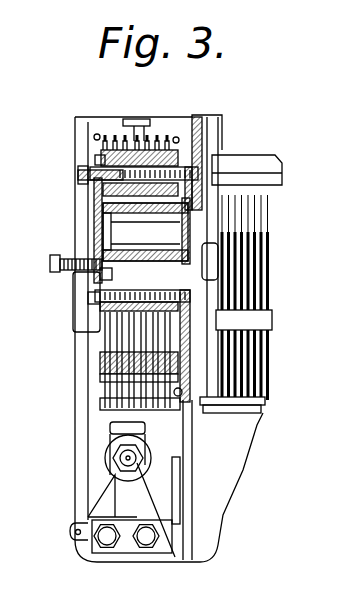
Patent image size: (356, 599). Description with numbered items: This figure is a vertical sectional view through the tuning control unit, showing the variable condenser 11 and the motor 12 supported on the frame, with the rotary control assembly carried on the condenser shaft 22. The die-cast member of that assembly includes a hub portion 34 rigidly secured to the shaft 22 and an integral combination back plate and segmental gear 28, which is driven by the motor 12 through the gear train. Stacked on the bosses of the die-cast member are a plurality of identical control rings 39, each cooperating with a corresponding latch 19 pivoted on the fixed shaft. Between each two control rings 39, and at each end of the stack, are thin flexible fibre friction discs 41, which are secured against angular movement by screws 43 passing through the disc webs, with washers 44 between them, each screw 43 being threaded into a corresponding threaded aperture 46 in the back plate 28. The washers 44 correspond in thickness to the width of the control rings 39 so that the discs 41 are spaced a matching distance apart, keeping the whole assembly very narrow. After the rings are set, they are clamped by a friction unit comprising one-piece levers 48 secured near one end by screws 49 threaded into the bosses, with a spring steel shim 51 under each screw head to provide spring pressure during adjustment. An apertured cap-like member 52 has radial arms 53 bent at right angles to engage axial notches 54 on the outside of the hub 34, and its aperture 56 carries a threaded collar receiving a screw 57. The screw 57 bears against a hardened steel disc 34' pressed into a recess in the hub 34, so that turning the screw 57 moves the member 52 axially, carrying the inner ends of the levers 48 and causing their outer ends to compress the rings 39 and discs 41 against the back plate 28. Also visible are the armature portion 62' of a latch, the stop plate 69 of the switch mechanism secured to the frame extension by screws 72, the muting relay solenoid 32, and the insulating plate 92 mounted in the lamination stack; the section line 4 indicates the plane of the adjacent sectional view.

The section line 4- 4 is at (103, 145).
The variable condenser 11 is at (235, 405).
The motor 12 is at (216, 504).
The latch 19 is at (100, 402).
The condenser shaft 22 is at (274, 244).
The back plate 28 is at (178, 394).
The solenoid 32 is at (107, 466).
The hub portion 34 is at (237, 166).
The hardened steel disc 34' is at (70, 230).
The control ring 39 is at (170, 147).
The friction disc 41 is at (100, 381).
The screw 43 is at (82, 327).
The washer 44 is at (100, 357).
The threaded aperture 46 is at (180, 317).
The lever 48 is at (97, 160).
The screw 49 is at (83, 180).
The shim 51 is at (80, 193).
The cap-like member 52 is at (100, 274).
The radial arm 53 is at (105, 291).
The notch 54 is at (150, 282).
The aperture 56 is at (110, 259).
The screw 57 is at (61, 255).
The armature portion 62' is at (220, 250).
The stop plate 69 is at (97, 417).
The screw 72 is at (100, 532).
The insulating plate 92 is at (113, 432).